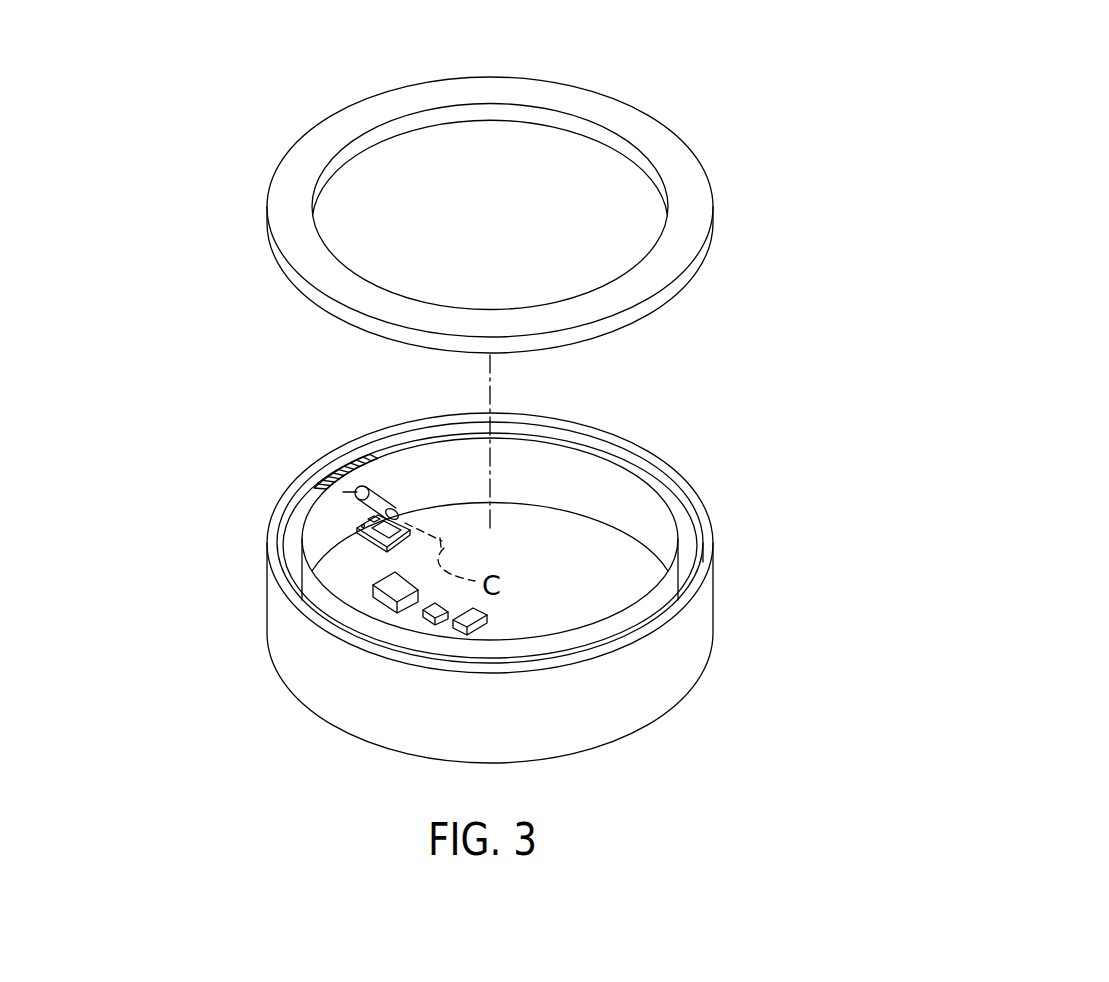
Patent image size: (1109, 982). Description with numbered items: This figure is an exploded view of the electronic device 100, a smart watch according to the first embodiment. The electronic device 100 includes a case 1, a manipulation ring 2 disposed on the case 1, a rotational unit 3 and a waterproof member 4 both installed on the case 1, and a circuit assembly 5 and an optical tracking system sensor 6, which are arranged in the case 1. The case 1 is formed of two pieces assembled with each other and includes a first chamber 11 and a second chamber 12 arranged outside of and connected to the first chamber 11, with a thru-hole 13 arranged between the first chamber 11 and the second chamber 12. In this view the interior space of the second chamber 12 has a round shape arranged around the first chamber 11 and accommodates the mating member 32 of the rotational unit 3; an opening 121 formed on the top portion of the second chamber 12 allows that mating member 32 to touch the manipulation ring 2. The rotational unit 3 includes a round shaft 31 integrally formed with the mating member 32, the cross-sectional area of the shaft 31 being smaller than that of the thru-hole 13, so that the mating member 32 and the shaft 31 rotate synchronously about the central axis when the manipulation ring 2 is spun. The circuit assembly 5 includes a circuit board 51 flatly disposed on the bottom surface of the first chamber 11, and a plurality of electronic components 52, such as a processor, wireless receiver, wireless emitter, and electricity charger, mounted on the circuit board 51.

The electronic device 100 is at (702, 44).
The case 1 is at (519, 570).
The first chamber 11 is at (557, 473).
The second chamber 12 is at (683, 557).
The opening 121 is at (638, 458).
The manipulation ring 2 is at (688, 145).
The rotational unit 3 is at (360, 433).
The shaft 31 is at (384, 505).
The mating member 32 is at (340, 458).
The waterproof member 4 is at (345, 510).
The circuit assembly 5 is at (425, 588).
The circuit board 51 is at (347, 585).
The electronic components 52 is at (387, 600).
The optical tracking system sensor 6 is at (324, 540).
The thru-hole 13 is at (355, 490).